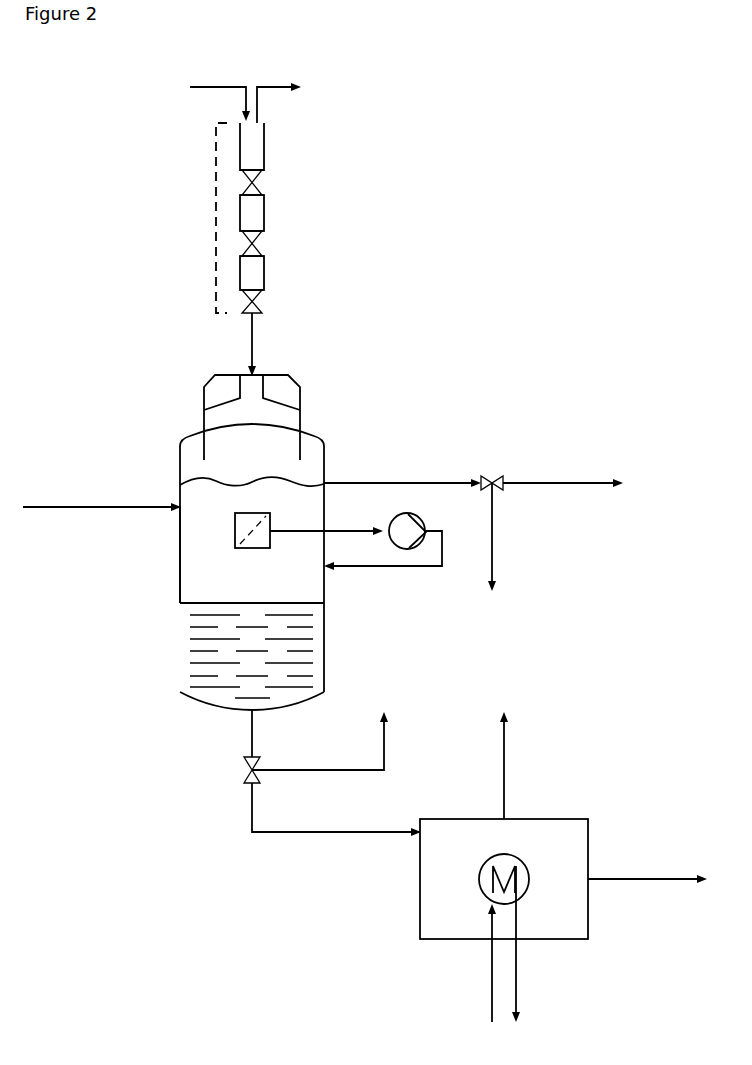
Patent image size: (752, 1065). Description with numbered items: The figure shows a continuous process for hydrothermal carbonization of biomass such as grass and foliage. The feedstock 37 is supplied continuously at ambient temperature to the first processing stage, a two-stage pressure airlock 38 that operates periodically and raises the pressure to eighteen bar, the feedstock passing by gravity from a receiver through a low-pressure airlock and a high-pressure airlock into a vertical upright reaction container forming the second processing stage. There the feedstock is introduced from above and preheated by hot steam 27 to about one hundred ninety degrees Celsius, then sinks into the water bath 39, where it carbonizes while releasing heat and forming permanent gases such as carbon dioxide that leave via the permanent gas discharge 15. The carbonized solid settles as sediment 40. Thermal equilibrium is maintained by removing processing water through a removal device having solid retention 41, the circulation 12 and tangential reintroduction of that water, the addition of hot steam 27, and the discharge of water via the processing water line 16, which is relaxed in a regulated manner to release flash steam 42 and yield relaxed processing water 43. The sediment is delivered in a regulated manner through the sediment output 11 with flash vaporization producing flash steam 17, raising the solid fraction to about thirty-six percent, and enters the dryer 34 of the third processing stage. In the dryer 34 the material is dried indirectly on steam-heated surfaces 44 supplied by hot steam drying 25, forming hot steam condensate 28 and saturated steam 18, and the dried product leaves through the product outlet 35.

The feedstock 37 is at (215, 87).
The permanent gas discharge 15 is at (277, 87).
The pressure airlock 38 is at (216, 218).
The hot steam for heating the second processing stage 27 is at (62, 507).
The water bath in the second processing stage 39 is at (180, 483).
The removal device having solid retention 41 is at (149, 555).
The sediment in the second processing stage 40 is at (180, 615).
The processing water from the second processing stage 16 is at (420, 483).
The relaxed processing water 43 is at (552, 449).
The flash steam from the relaxation of processing water 42 is at (492, 543).
The circulation 12 is at (413, 568).
The sediment output 11 is at (306, 773).
The flash steam from sediment relaxation 17 is at (313, 770).
The dryer in steam atmosphere 34 is at (444, 819).
The steam from the drying 18 is at (504, 772).
The steam-heated surfaces 44 is at (479, 879).
The product outlet 35 is at (662, 879).
The hot steam drying 25 is at (492, 987).
The hot steam condensate from the drying 28 is at (516, 987).